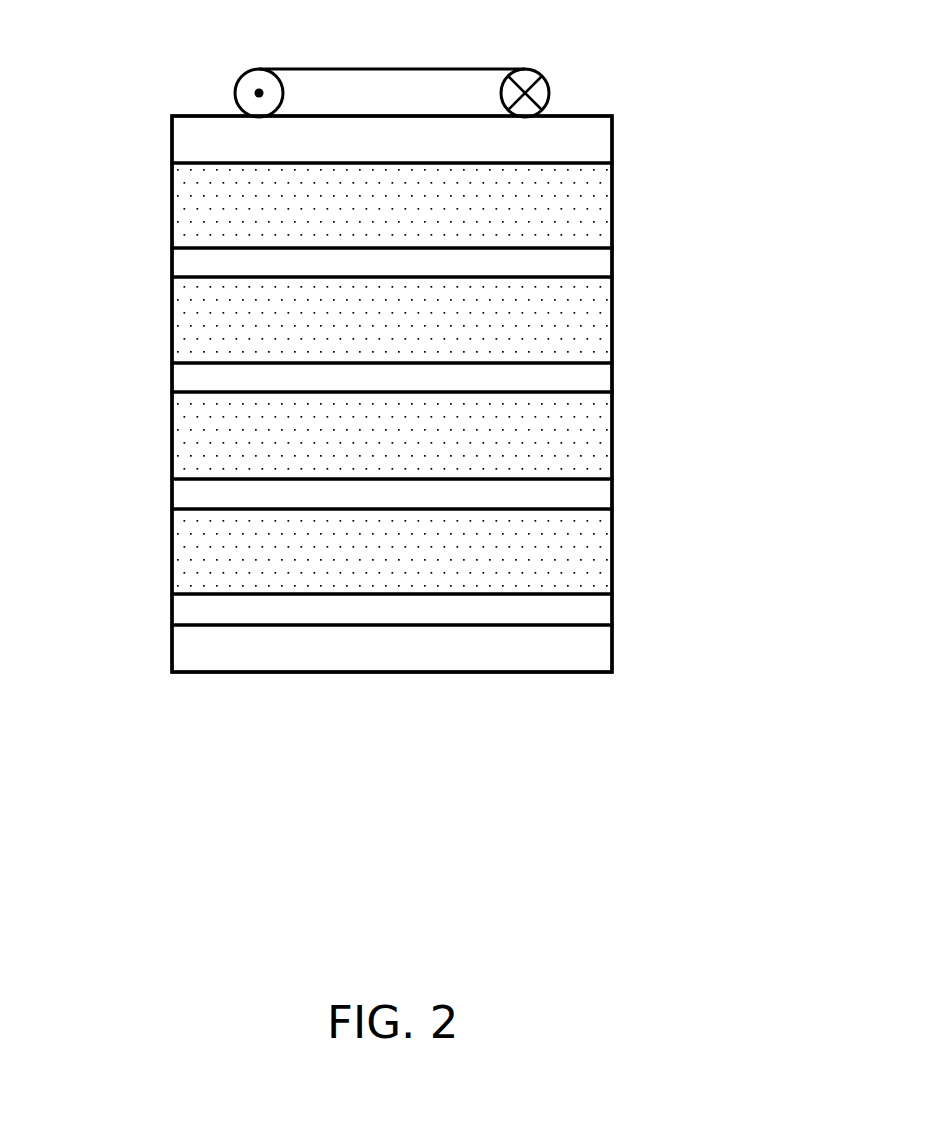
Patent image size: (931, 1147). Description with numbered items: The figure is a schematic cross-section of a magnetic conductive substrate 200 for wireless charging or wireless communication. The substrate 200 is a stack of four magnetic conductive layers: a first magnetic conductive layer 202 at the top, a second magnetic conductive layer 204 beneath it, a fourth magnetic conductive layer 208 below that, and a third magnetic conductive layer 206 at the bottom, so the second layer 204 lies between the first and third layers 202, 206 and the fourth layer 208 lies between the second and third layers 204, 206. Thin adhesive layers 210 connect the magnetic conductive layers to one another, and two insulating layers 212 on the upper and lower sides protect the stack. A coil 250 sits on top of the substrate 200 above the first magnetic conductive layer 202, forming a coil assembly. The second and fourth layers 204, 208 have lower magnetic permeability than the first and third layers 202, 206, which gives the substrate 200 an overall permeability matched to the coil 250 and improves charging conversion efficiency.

The magnetic conductive substrate 200 is at (722, 118).
The first magnetic conductive layer 202 is at (612, 204).
The second magnetic conductive layer 204 is at (612, 322).
The third magnetic conductive layer 206 is at (612, 552).
The fourth magnetic conductive layer 208 is at (612, 437).
The adhesive layer 210 is at (612, 265).
The insulating layer 212 is at (612, 140).
The coil 250 is at (391, 88).